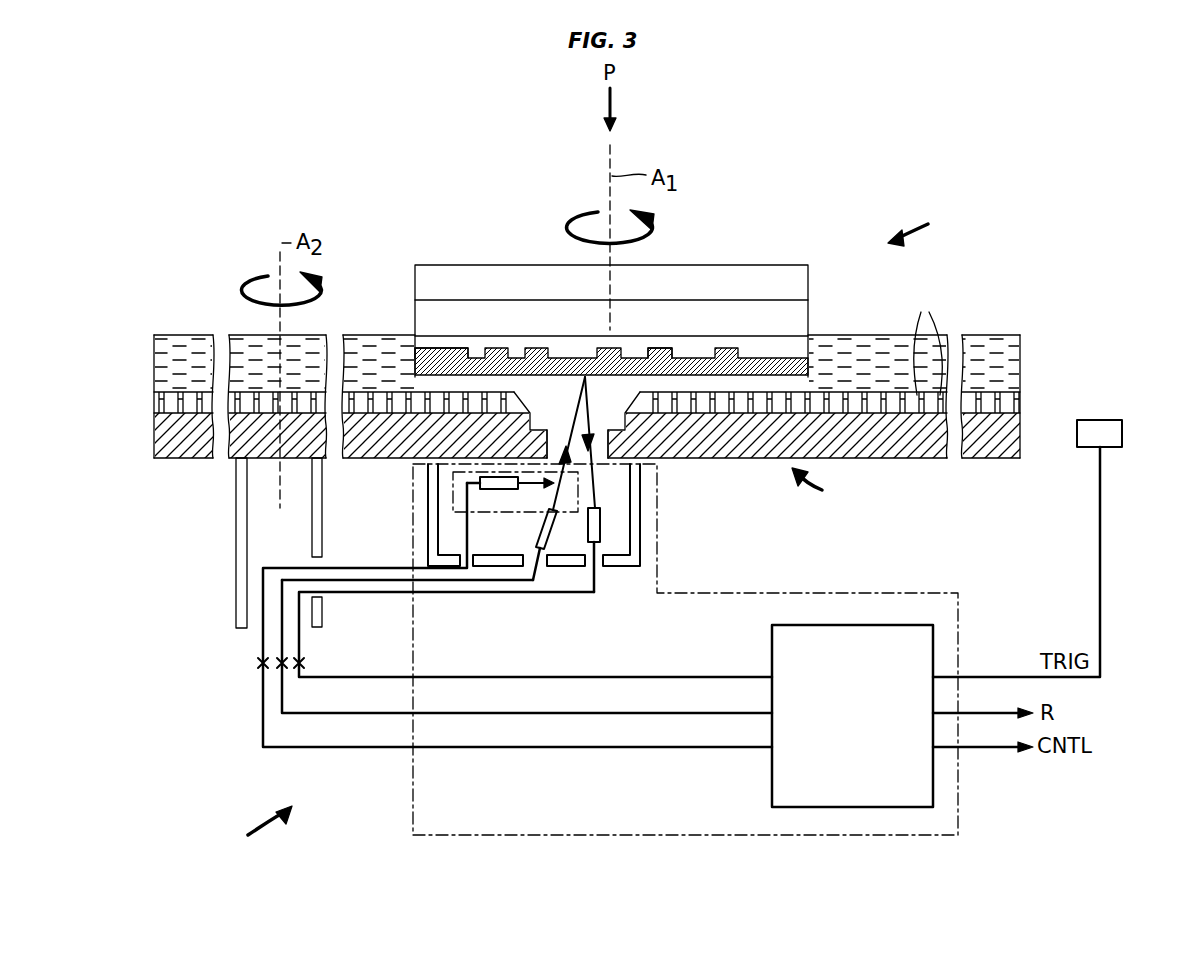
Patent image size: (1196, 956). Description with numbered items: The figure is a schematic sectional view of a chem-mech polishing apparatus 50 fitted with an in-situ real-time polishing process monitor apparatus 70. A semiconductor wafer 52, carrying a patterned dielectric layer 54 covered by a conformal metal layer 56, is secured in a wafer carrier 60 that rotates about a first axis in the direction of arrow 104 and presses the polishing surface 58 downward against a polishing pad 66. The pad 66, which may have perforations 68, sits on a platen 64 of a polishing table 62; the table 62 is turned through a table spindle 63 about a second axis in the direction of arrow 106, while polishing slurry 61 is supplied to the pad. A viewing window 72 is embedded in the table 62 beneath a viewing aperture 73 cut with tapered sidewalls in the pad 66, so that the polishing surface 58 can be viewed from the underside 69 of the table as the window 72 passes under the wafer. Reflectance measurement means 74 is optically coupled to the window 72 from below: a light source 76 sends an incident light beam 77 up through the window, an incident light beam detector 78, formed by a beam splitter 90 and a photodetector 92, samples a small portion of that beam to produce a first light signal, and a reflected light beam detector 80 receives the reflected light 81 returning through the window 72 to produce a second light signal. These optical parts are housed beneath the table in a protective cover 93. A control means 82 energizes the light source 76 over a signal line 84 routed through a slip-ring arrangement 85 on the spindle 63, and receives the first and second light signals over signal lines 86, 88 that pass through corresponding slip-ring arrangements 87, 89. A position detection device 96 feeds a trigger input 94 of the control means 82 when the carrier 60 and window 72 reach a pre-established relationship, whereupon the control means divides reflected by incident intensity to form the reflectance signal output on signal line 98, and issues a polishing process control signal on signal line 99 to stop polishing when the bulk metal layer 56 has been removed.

The apparatus 50 is at (923, 226).
The semiconductor wafer 52 is at (809, 320).
The patterned dielectric layer 54 is at (705, 348).
The conformal metal layer 56 is at (665, 356).
The polishing surface 58 is at (445, 372).
The wafer carrier 60 is at (755, 265).
The polishing slurry 61 is at (990, 341).
The polishing table 62 is at (1021, 452).
The table spindle 63 is at (236, 517).
The platen 64 is at (985, 455).
The polishing pad 66 is at (1016, 405).
The perforations 68 is at (927, 340).
The underside 69 is at (822, 486).
The in-situ real-time polishing process monitor apparatus 70 is at (253, 826).
The viewing window 72 is at (597, 436).
The viewing aperture 73 is at (620, 406).
The reflectance measurement means 74 is at (752, 593).
The light source 76 is at (543, 550).
The incident light beam 77 is at (568, 430).
The incident light beam detector 78 is at (510, 513).
The reflected light beam detector 80 is at (601, 525).
The reflected light 81 is at (598, 495).
The control means 82 is at (866, 726).
The signal line 84 is at (732, 713).
The slip-ring arrangement 85 is at (280, 668).
The signal line 86 is at (710, 747).
The slip-ring arrangement 87 is at (258, 664).
The signal line 88 is at (737, 677).
The slip-ring arrangement 89 is at (304, 664).
The beam splitter 90 is at (551, 498).
The photodetector 92 is at (496, 489).
The protective cover 93 is at (428, 512).
The trigger input 94 is at (993, 677).
The position detection device 96 is at (1122, 433).
The signal line 98 is at (1000, 713).
The signal line 99 is at (993, 747).
The arrow 104 is at (568, 227).
The arrow 106 is at (241, 292).